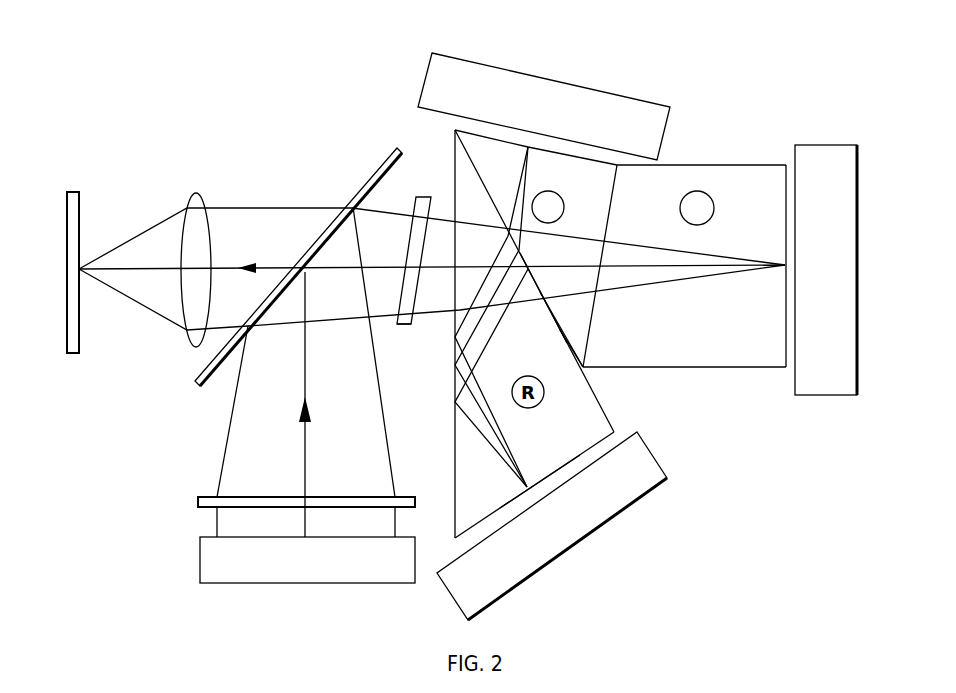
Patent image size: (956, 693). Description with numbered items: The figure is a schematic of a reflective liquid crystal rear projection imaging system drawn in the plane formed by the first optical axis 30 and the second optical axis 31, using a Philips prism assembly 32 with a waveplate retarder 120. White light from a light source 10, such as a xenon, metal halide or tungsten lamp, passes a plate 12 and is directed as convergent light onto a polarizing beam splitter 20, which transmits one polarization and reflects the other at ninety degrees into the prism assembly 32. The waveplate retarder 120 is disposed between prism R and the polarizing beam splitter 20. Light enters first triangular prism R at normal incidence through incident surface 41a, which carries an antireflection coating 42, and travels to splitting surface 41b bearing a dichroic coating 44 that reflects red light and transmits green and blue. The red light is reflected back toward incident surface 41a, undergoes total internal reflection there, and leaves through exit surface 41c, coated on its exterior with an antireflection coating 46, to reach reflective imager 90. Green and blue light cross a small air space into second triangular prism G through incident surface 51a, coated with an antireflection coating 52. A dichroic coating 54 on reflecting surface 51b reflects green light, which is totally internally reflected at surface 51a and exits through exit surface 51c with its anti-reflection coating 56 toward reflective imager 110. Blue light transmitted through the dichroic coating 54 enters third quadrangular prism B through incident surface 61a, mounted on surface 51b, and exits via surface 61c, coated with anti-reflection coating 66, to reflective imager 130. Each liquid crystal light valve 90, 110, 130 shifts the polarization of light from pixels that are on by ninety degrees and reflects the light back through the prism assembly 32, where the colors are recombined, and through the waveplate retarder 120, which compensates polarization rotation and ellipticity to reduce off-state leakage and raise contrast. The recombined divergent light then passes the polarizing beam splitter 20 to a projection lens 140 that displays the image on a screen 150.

The light source 10 is at (205, 540).
The condenser plate 12 is at (200, 498).
The polarizing beam splitter 20 is at (362, 185).
The first optical axis 30 is at (328, 404).
The second optical axis 31 is at (347, 275).
The Philips prism assembly 32 is at (648, 392).
The incident surface 41a is at (455, 200).
The splitting surface 41b is at (565, 342).
The exit surface 41c is at (598, 437).
The antireflection coating 42 is at (457, 331).
The dichroic coating 44 is at (575, 355).
The antireflection coating 46 is at (555, 468).
The incident surface 51a is at (560, 326).
The reflecting surface 51b is at (612, 200).
The exit surface 51c is at (577, 160).
The antireflection coating 52 is at (570, 338).
The dichroic coating 54 is at (605, 193).
The anti-reflection coating 56 is at (500, 143).
The incident surface 61a is at (607, 222).
The exit surface 61c is at (785, 237).
The anti-reflection coating 66 is at (785, 300).
The reflective imager 90 is at (637, 500).
The reflective imager 110 is at (473, 62).
The waveplate retarder 120 is at (397, 321).
The reflective imager 130 is at (828, 190).
The projection lens 140 is at (195, 195).
The screen 150 is at (72, 192).